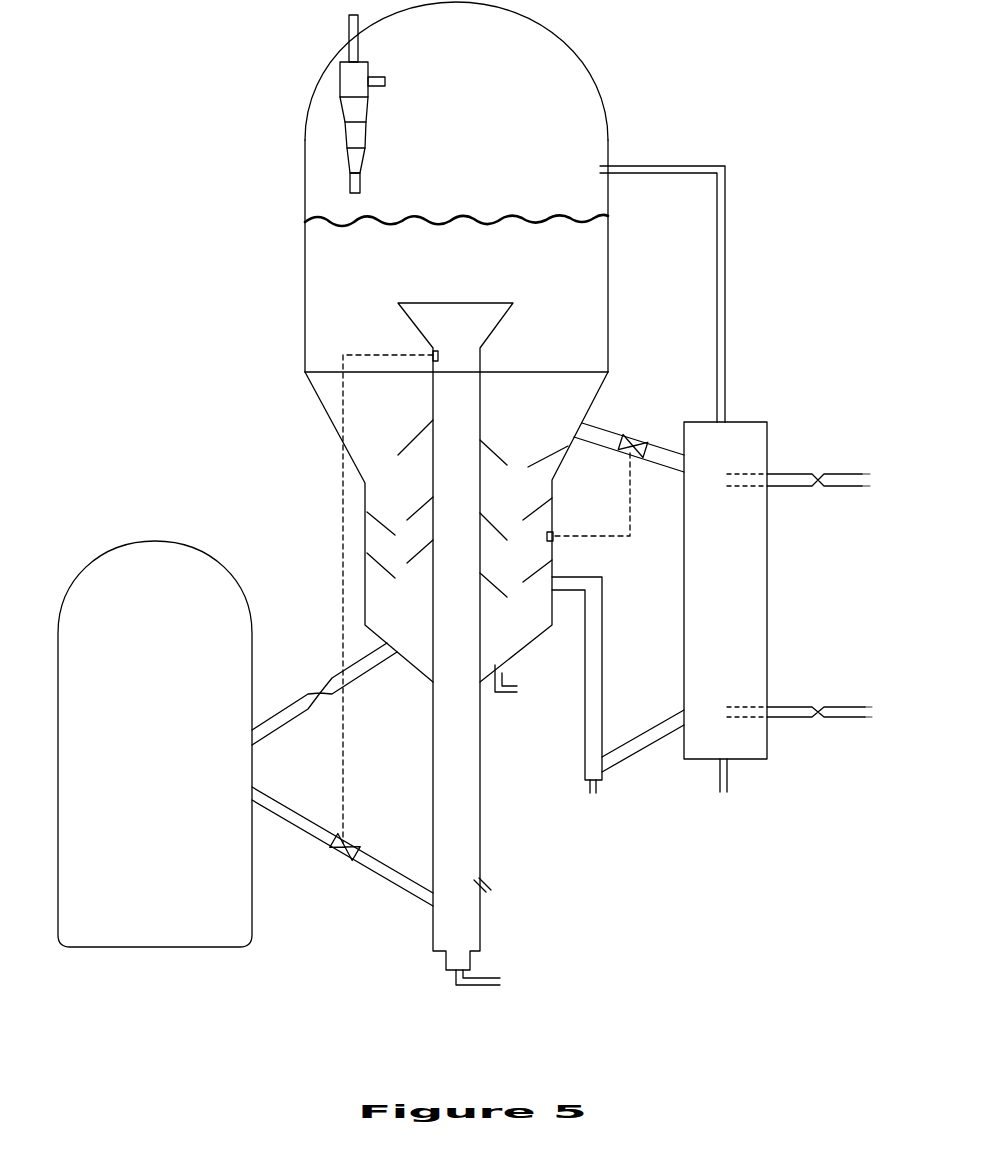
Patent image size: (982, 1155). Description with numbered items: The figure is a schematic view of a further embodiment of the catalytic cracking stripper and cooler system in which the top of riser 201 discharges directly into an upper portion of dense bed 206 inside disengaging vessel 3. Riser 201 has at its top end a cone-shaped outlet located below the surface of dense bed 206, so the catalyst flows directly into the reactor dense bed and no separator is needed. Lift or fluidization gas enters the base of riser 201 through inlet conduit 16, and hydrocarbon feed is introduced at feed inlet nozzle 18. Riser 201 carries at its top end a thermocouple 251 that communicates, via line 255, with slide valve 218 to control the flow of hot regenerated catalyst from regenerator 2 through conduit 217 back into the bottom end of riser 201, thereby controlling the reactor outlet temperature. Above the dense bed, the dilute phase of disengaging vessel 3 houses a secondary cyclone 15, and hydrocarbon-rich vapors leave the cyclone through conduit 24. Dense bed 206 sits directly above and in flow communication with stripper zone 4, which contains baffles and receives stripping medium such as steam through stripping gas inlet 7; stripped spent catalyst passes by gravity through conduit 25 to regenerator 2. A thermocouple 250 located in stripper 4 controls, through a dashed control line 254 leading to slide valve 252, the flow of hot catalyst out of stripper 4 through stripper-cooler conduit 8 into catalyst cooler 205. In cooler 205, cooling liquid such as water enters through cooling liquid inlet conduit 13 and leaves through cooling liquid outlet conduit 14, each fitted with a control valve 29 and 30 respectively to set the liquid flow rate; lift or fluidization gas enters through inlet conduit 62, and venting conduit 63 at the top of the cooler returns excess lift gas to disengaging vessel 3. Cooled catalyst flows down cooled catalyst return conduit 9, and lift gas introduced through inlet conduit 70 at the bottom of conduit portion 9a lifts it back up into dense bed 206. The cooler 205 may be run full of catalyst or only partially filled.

The regenerator 2 is at (155, 762).
The disengaging vessel 3 is at (584, 58).
The catalyst stripper 4 is at (322, 429).
The stripping gas inlet 7 is at (523, 688).
The stripper-cooler conduit 8 is at (598, 427).
The cooled catalyst return conduit 9 is at (658, 722).
The cooled catalyst return conduit portion 9a is at (605, 630).
The cooling liquid inlet conduit 13 is at (872, 480).
The cooling liquid outlet conduit 14 is at (874, 714).
The secondary cyclone 15 is at (340, 100).
The inlet conduit 16 is at (503, 982).
The feed inlet nozzle 18 is at (492, 893).
The conduit 24 is at (349, 35).
The conduit 25 is at (306, 706).
The control valve 29 is at (818, 468).
The control valve 30 is at (820, 700).
The inlet conduit 62 is at (726, 797).
The venting conduit 63 is at (725, 265).
The inlet conduit 70 is at (595, 797).
The riser 201 is at (488, 811).
The catalyst cooler 205 is at (778, 607).
The dense bed 206 is at (322, 268).
The conduit 217 is at (396, 893).
The slide valve 218 is at (334, 853).
The thermocouple 250 is at (554, 544).
The thermocouple 251 is at (433, 354).
The slide valve 252 is at (636, 438).
The control line 254 is at (633, 488).
The line 255 is at (339, 602).